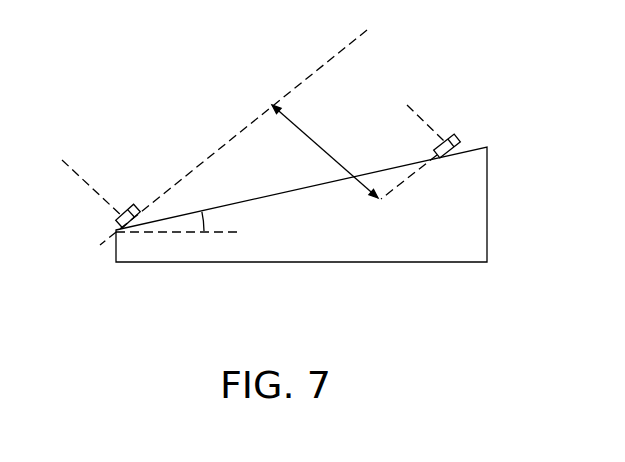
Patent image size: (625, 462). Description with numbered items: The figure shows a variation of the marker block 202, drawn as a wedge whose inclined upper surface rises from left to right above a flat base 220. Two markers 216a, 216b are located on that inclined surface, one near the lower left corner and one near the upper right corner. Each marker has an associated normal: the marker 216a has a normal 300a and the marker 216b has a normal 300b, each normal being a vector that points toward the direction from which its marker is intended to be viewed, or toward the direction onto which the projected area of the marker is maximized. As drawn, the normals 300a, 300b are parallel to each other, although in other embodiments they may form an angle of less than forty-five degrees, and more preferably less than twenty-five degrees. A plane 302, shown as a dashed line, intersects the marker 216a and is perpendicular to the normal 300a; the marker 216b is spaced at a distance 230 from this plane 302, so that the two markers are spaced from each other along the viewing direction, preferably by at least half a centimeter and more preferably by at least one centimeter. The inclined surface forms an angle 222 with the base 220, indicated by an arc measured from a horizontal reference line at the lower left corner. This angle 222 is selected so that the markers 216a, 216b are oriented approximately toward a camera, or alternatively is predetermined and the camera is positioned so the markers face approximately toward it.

The marker block 202 is at (315, 108).
The plane 302 is at (203, 160).
The normal of first marker 300a is at (85, 178).
The normal of second marker 300b is at (417, 113).
The first marker 216a is at (110, 233).
The second marker 216b is at (450, 136).
The distance 230 is at (362, 148).
The angle 222 is at (203, 222).
The base 220 is at (380, 262).